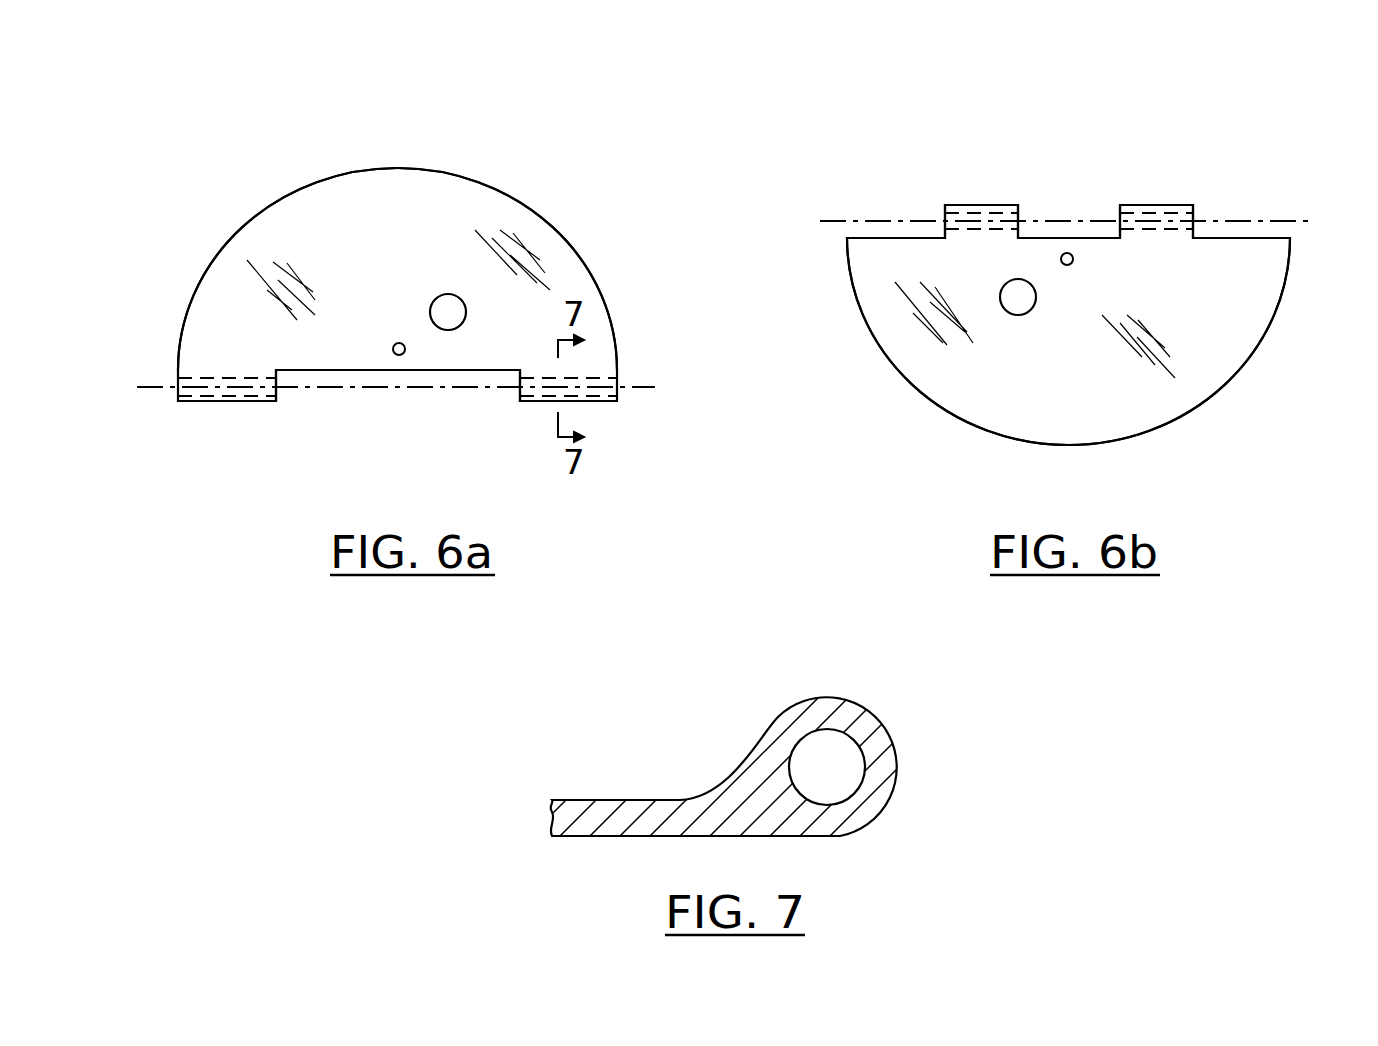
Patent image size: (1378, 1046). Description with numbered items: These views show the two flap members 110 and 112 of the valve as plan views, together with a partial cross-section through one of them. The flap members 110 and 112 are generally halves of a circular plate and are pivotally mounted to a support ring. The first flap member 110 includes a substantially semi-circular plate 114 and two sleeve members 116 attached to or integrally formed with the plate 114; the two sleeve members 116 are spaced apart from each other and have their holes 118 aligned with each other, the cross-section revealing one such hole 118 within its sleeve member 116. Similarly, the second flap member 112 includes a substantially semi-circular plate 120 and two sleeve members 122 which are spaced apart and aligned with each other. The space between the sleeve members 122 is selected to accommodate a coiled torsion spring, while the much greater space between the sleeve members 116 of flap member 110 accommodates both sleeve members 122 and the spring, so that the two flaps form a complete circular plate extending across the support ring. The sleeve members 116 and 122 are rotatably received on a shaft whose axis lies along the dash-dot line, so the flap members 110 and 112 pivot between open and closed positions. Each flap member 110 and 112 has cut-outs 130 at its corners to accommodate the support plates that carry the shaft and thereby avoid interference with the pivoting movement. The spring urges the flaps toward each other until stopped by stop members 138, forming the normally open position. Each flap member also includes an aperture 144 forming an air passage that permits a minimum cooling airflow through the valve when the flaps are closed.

In FIG. 6A, the flap member 110 is at (410, 264).
In FIG. 6B, the flap member 112 is at (1090, 388).
In FIG. 6A, the semi-circular plate 114 is at (452, 195).
In FIG. 7, the semi-circular plate 114 is at (615, 800).
In FIG. 6A, the sleeve members 116 is at (208, 403).
In FIG. 7, the sleeve members 116 is at (828, 697).
In FIG. 7, the holes 118 is at (835, 768).
In FIG. 6B, the semi-circular plate 120 is at (1213, 360).
In FIG. 6B, the sleeve members 122 is at (975, 204).
In FIG. 6A, the cut-outs 130 is at (617, 370).
In FIG. 6B, the cut-outs 130 is at (1290, 238).
In FIG. 6A, the stop members 138 is at (405, 349).
In FIG. 6B, the stop members 138 is at (1073, 259).
In FIG. 6A, the aperture 144 is at (457, 292).
In FIG. 6B, the aperture 144 is at (1010, 314).